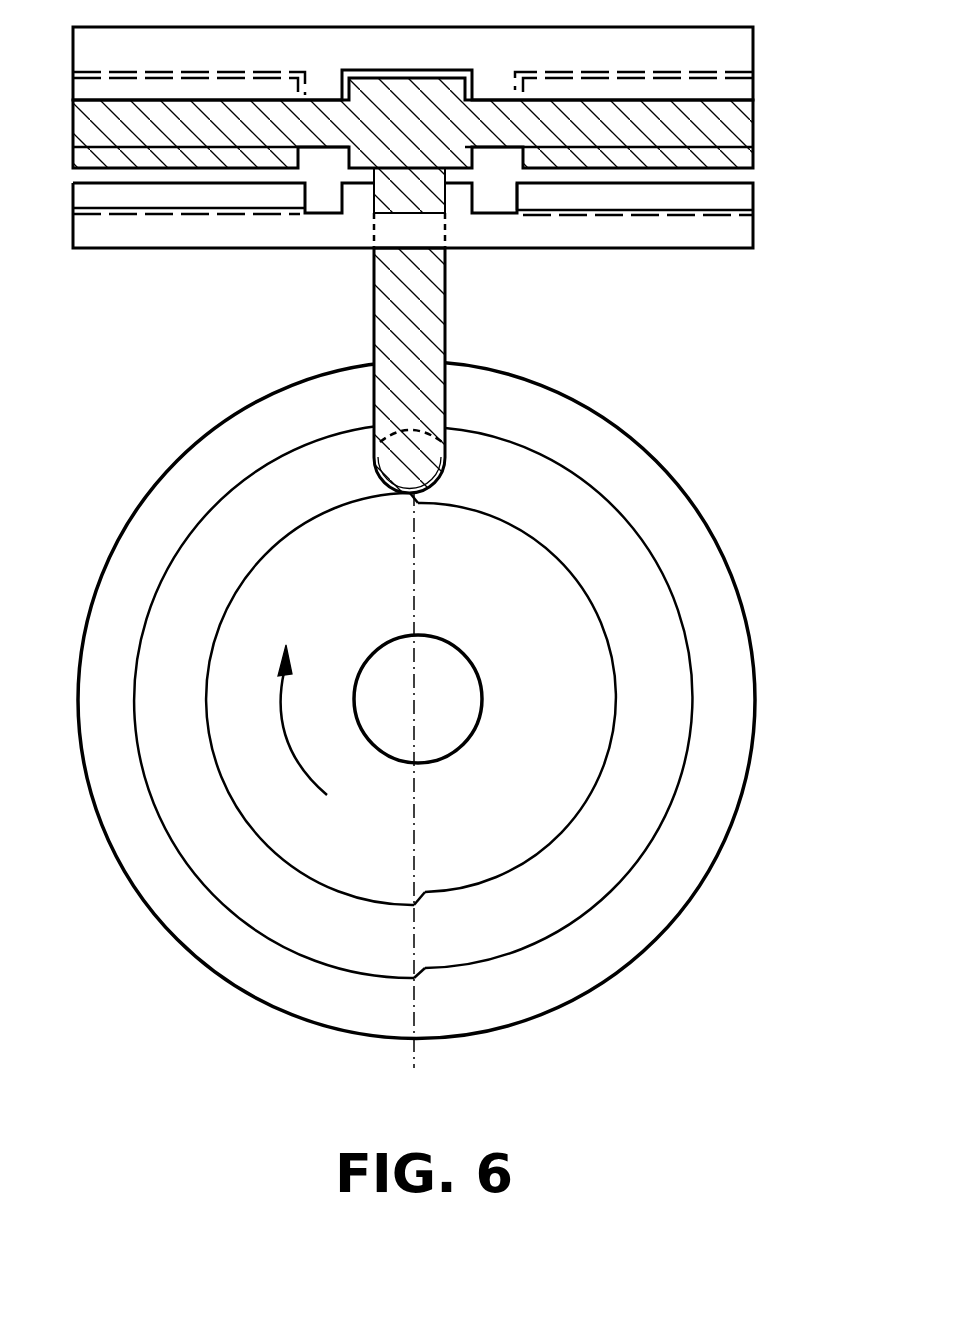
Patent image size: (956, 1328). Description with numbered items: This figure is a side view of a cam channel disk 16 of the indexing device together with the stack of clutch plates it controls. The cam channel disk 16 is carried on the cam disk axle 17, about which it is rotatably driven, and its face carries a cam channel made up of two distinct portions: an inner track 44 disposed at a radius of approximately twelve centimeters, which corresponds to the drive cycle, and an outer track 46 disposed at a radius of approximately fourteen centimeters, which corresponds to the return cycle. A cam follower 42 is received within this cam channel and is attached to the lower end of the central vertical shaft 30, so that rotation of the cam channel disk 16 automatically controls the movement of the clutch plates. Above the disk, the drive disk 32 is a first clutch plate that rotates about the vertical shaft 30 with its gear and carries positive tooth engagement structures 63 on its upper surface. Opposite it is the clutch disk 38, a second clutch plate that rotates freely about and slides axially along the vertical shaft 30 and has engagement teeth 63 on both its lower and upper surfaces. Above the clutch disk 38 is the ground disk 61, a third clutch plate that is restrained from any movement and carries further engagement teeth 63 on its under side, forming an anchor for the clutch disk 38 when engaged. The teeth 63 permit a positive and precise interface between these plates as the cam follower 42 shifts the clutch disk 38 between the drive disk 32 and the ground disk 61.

The cam channel disk 16 is at (590, 406).
The cam disk axle 17 is at (445, 713).
The central vertical shaft 30 is at (445, 311).
The drive disk 32 is at (753, 226).
The clutch disk 38 is at (753, 120).
The cam follower 42 is at (444, 478).
The inner track 44 is at (610, 573).
The outer track 46 is at (167, 638).
The ground disk 61 is at (753, 30).
The positive tooth engagement structures 63 is at (753, 167).